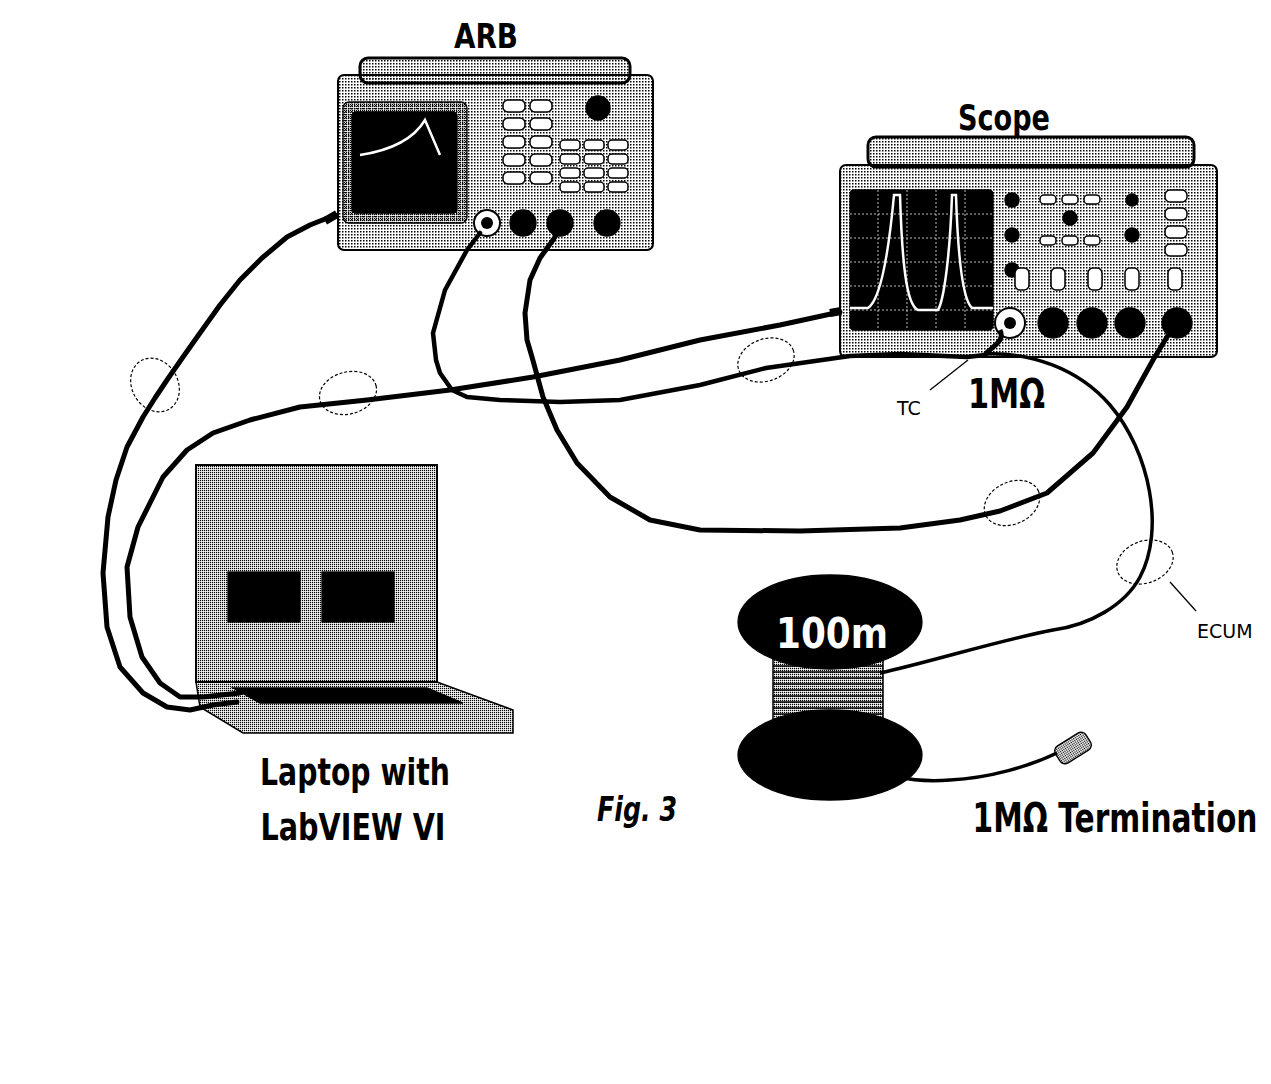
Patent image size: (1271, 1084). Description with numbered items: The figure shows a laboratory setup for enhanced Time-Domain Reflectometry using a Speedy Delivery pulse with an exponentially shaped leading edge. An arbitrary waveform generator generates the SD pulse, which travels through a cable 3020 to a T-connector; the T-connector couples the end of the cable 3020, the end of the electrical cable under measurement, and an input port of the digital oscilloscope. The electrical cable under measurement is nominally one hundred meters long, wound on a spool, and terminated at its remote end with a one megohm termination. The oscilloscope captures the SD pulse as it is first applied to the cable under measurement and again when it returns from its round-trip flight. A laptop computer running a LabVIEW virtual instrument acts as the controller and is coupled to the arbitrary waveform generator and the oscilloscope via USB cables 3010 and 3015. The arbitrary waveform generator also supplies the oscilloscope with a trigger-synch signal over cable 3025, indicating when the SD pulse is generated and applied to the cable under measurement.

The USB cable 3010 is at (152, 360).
The USB cable 3015 is at (335, 380).
The cable 3020 is at (778, 385).
The cable 3025 is at (990, 484).